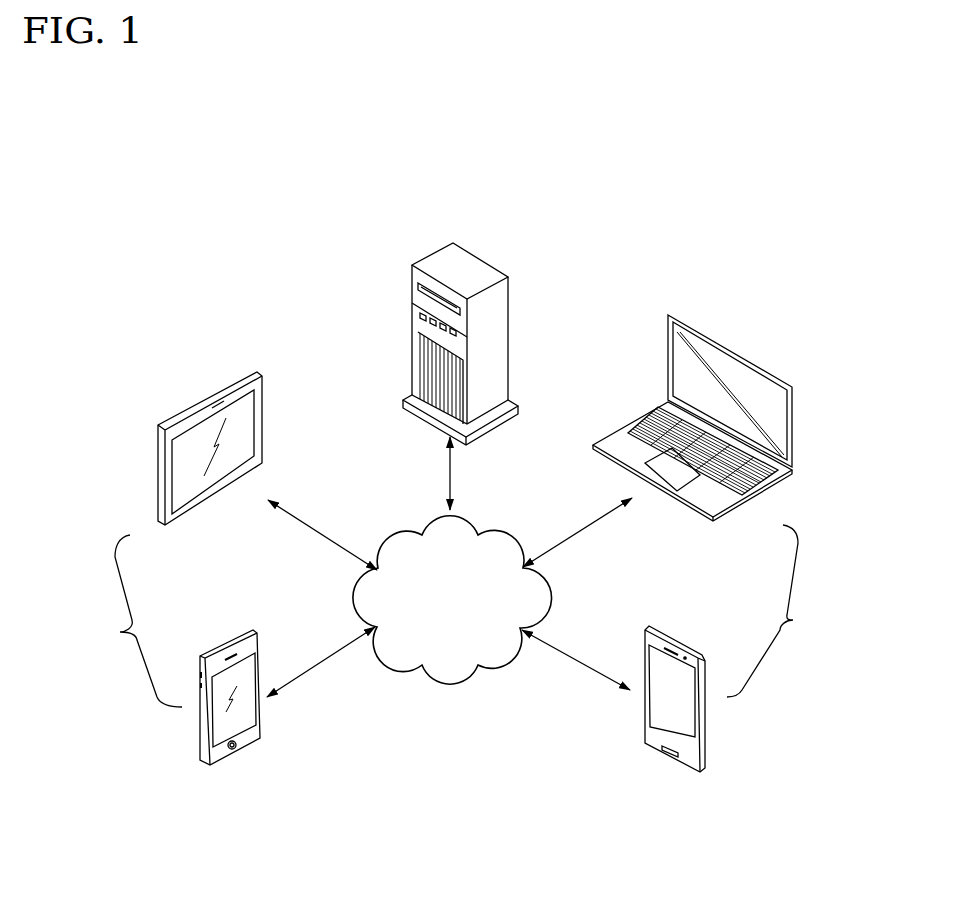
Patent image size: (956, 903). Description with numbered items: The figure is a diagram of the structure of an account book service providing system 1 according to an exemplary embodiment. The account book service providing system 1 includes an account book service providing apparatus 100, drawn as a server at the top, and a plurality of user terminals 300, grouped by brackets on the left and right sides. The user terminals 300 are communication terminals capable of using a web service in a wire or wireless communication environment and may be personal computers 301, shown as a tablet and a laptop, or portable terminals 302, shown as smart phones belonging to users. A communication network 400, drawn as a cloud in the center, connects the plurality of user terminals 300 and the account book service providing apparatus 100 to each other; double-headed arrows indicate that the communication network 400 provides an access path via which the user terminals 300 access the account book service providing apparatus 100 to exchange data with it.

The account book service providing system 1 is at (727, 214).
The account book service providing apparatus 100 is at (480, 260).
The user terminals 300 is at (457, 616).
The personal computers 301 is at (207, 392).
The portable terminals 302 is at (248, 632).
The communication network 400 is at (510, 527).